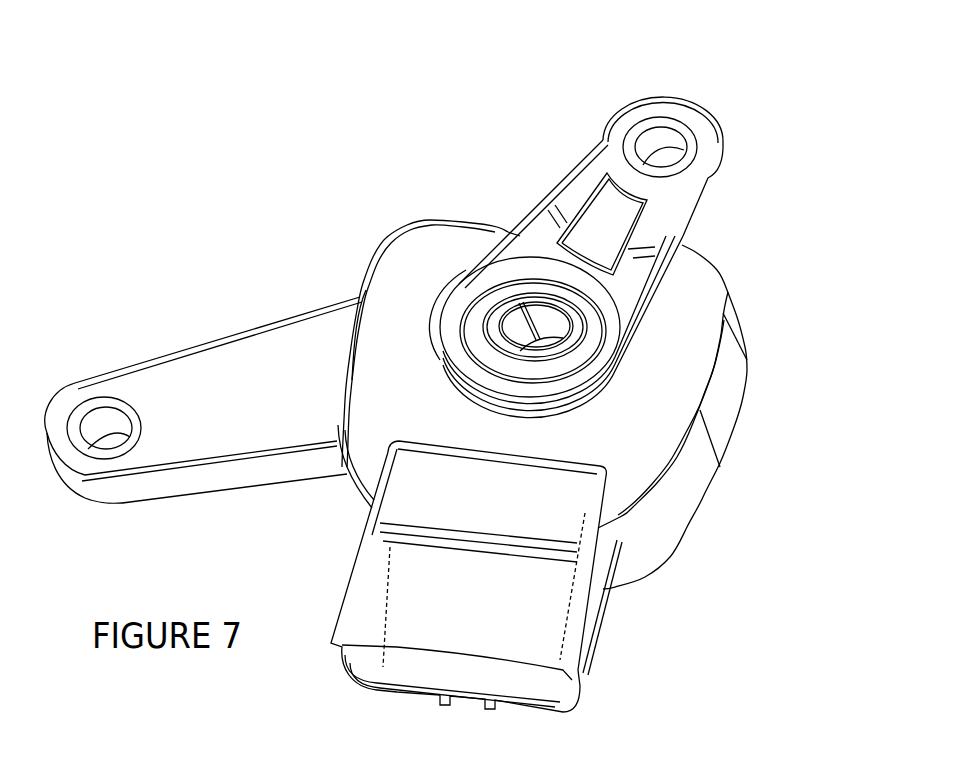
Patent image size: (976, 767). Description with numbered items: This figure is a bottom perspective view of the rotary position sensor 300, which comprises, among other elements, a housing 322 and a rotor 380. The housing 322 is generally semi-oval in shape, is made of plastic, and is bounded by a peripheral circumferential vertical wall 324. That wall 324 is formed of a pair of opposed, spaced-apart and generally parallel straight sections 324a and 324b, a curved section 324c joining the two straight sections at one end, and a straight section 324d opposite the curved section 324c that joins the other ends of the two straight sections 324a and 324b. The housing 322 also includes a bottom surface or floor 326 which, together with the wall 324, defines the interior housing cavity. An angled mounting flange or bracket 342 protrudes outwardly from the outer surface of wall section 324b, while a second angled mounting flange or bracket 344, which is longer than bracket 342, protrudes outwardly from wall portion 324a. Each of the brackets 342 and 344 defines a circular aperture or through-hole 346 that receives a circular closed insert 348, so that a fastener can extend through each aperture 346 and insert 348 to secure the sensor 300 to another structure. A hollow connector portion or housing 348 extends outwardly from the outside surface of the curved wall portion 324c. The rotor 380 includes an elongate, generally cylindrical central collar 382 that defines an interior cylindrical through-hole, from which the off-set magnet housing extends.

The rotary position sensor 300 is at (368, 167).
The housing 322 is at (456, 215).
The peripheral circumferential vertical wall 324 is at (727, 363).
The straight section 324a is at (342, 358).
The straight section 324b is at (717, 420).
The curved section 324c is at (622, 565).
The straight section 324d is at (493, 227).
The bottom surface or floor 326 is at (675, 340).
The angled mounting flange or bracket 342 is at (707, 210).
The angled mounting flange or bracket 344 is at (217, 492).
The circular aperture or through-hole 346 is at (666, 113).
The circular closed insert / connector portion or housing 348 is at (692, 135).
The rotor 380 is at (493, 324).
The central collar 382 is at (497, 340).